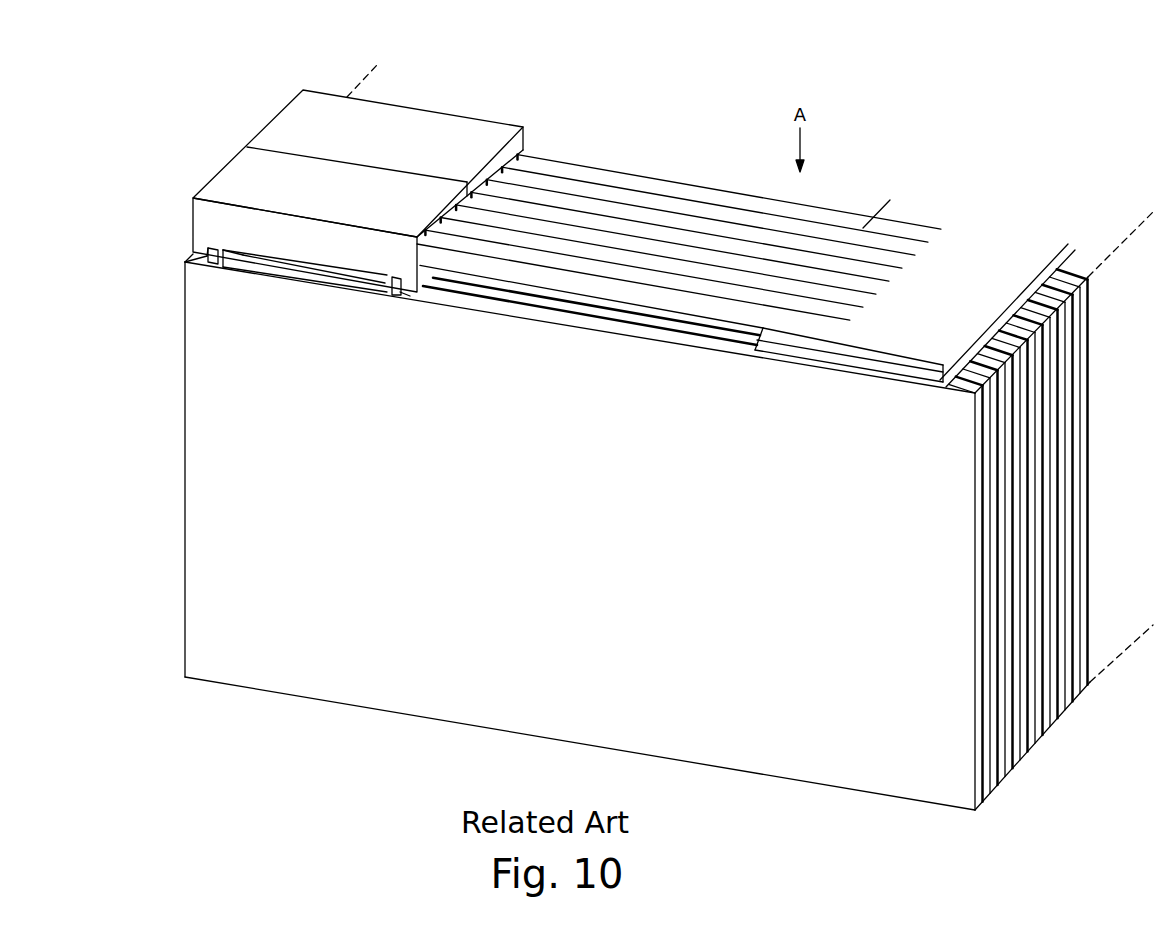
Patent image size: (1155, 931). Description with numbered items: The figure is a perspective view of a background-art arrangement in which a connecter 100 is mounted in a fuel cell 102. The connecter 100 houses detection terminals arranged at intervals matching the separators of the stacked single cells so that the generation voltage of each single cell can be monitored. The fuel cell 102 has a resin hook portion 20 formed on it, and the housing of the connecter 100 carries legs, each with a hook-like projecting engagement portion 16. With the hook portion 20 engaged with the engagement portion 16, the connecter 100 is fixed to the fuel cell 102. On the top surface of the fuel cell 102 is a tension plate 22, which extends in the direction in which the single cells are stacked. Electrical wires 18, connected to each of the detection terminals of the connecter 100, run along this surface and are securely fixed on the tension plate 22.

The connecter 100 is at (298, 112).
The fuel cell 102 is at (562, 780).
The electrical wires 18 is at (650, 182).
The tension plate 22 is at (807, 360).
The engagement portion 16 is at (188, 258).
The hook portion 20 is at (215, 263).